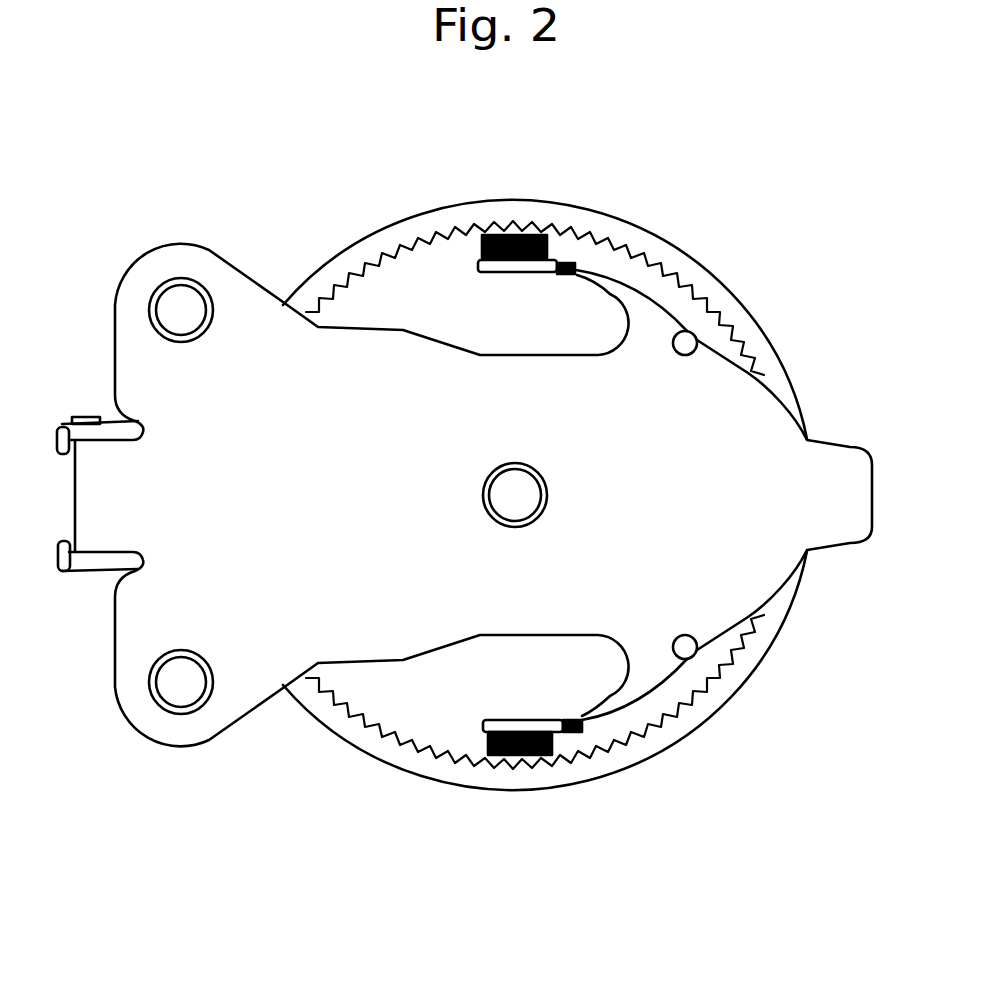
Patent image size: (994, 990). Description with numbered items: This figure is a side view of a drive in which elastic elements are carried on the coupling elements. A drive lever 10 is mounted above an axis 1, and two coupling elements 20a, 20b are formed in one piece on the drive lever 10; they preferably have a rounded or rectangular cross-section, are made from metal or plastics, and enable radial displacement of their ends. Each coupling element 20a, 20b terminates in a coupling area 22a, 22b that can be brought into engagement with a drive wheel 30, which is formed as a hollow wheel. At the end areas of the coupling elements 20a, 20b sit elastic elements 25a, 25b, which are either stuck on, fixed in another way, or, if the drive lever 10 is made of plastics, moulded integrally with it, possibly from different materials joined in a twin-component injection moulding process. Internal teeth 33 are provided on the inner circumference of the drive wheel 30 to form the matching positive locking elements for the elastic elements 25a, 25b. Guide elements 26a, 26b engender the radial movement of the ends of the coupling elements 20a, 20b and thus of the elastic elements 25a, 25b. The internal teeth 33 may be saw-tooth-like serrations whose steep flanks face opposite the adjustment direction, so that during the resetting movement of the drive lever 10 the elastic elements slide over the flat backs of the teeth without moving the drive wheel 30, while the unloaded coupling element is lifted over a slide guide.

The axis 1 is at (510, 497).
The drive lever 10 is at (237, 395).
The coupling element 20a is at (632, 297).
The coupling element 20b is at (637, 687).
The coupling area 22a is at (477, 270).
The coupling area 22b is at (512, 721).
The elastic element 25a is at (500, 232).
The elastic element 25b is at (540, 757).
The guide element 26a is at (565, 265).
The guide element 26b is at (575, 733).
The drive wheel 30 is at (315, 281).
The internal teeth 33 is at (392, 250).